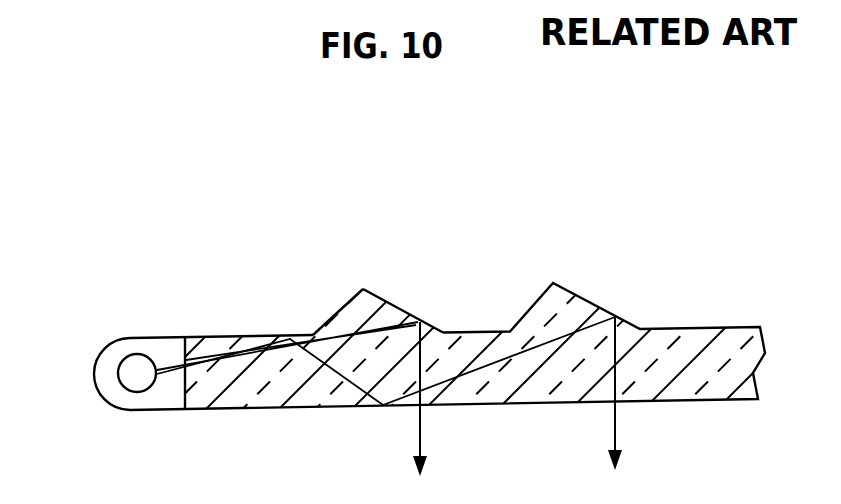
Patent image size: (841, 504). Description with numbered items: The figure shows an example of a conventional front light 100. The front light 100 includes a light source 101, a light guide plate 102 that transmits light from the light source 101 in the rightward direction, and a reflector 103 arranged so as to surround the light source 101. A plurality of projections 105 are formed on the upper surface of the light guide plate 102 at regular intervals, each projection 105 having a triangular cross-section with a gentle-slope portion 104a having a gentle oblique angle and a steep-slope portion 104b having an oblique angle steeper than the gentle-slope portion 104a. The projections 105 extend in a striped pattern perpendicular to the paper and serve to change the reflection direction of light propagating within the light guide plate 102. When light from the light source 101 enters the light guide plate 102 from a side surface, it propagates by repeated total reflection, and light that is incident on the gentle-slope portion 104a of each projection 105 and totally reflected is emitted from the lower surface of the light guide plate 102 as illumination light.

The front light 100 is at (517, 180).
The light source 101 is at (137, 392).
The light guide plate 102 is at (282, 410).
The reflector 103 is at (111, 349).
The gentle-slope portion 104a is at (412, 315).
The steep-slope portion 104b is at (335, 307).
The projection 105 is at (384, 300).